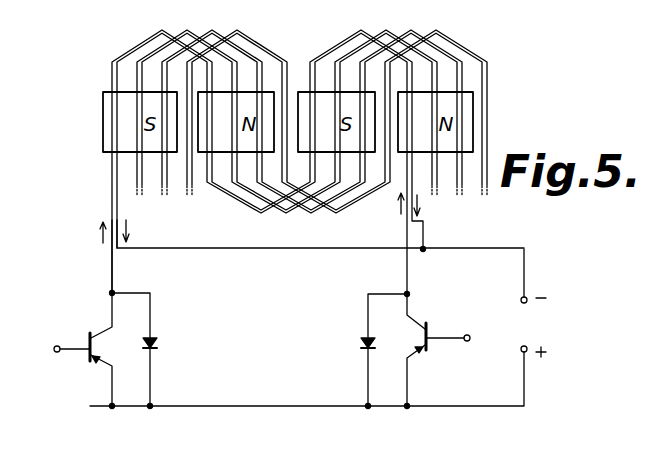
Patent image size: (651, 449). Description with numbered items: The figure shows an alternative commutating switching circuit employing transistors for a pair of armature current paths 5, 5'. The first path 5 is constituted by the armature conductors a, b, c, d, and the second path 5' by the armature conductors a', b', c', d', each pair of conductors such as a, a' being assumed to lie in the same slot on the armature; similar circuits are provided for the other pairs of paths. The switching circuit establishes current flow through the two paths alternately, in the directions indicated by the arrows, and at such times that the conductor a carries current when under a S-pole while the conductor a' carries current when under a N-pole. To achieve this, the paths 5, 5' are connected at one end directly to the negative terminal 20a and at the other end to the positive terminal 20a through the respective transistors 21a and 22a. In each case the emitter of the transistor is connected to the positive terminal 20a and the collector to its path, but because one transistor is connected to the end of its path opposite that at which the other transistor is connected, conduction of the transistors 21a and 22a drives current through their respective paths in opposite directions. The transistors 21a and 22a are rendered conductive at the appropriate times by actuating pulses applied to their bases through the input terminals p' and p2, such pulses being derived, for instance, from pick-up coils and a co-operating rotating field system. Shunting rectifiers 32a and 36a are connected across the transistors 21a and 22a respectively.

The armature conductor a is at (249, 161).
The armature conductor a' is at (249, 163).
The armature conductor b is at (287, 110).
The armature conductor b' is at (287, 112).
The armature conductor c is at (312, 120).
The armature conductor c' is at (312, 112).
The armature conductor d is at (337, 114).
The armature conductor d' is at (351, 120).
The armature current path 5 is at (236, 243).
The armature current path 5' is at (320, 221).
The supply terminals 20a is at (326, 327).
The transistor 21a is at (108, 362).
The transistor 22a is at (410, 345).
The shunting rectifier 32a is at (157, 344).
The shunting rectifier 36a is at (366, 345).
The input terminal p' is at (57, 346).
The input terminal p2 is at (464, 339).